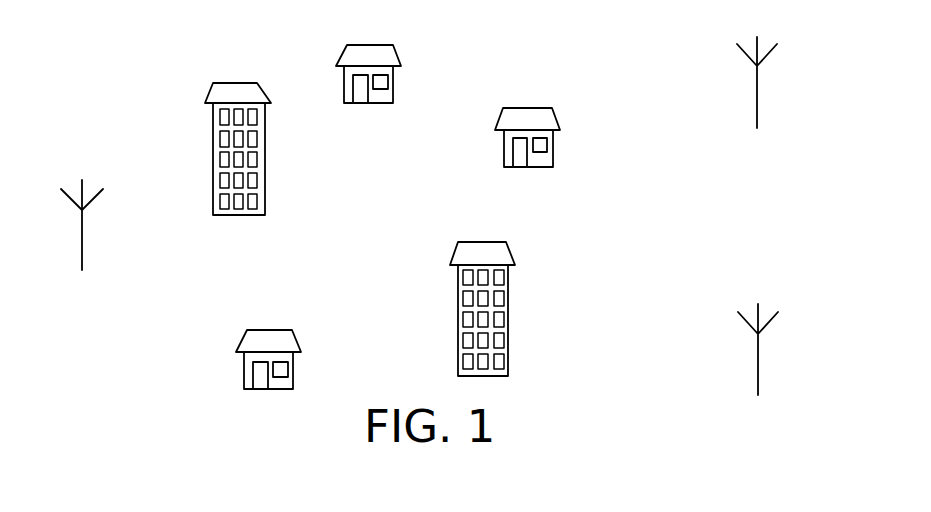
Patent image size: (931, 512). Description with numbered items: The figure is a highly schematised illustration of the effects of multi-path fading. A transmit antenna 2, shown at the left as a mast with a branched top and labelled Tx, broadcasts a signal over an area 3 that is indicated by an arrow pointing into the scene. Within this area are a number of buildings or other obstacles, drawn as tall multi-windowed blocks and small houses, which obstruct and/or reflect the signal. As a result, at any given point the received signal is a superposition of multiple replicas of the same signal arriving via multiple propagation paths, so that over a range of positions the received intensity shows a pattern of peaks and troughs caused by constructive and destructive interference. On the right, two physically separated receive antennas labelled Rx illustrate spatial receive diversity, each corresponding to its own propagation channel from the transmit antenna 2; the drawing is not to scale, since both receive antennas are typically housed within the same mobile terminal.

The transmit antenna 2 is at (82, 258).
The area 3 is at (285, 43).